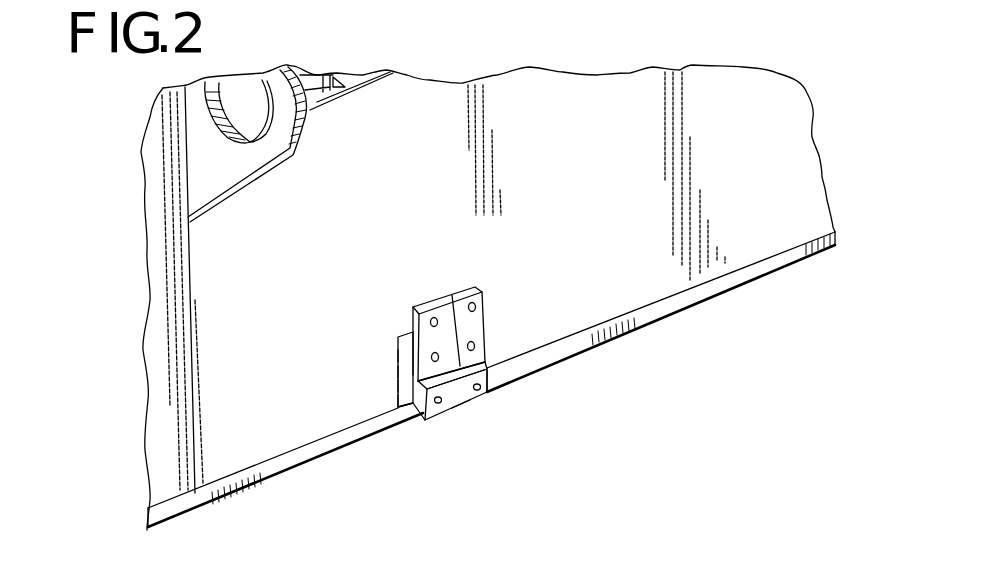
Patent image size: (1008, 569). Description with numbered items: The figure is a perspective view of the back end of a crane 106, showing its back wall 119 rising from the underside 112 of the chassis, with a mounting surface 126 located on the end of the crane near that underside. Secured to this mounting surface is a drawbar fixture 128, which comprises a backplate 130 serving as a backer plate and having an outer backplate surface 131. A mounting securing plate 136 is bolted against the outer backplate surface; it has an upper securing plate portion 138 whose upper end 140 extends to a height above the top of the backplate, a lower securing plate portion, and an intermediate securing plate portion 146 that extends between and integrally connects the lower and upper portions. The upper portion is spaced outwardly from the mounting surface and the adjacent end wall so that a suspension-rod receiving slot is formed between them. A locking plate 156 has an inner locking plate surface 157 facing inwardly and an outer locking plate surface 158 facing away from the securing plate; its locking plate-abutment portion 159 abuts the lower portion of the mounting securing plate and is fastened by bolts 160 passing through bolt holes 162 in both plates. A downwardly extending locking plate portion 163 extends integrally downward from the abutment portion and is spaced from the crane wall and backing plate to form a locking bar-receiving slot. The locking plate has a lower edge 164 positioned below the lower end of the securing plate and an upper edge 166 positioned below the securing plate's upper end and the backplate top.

The crane 106 is at (158, 145).
The back wall 119 is at (777, 190).
The underside 112 is at (797, 259).
The upper edge 166 is at (452, 295).
The upper end 140 is at (478, 291).
The intermediate securing plate portion 146 is at (486, 317).
The upper securing plate portion 138 is at (486, 340).
The outer backplate surface 131 is at (398, 339).
The backplate 130 is at (398, 356).
The drawbar fixture 128 is at (398, 372).
The mounting surface 126 is at (398, 386).
The inner locking plate surface 157 is at (398, 404).
The mounting securing plate 136 is at (398, 408).
The outer locking plate surface 158 is at (400, 413).
The bolts 160 is at (415, 418).
The lower edge 164 is at (438, 403).
The downwardly extending locking plate portion 163 is at (460, 405).
The locking plate 156 is at (487, 400).
The locking plate-abutment portion 159 is at (489, 392).
The bolt holes 162 is at (488, 384).